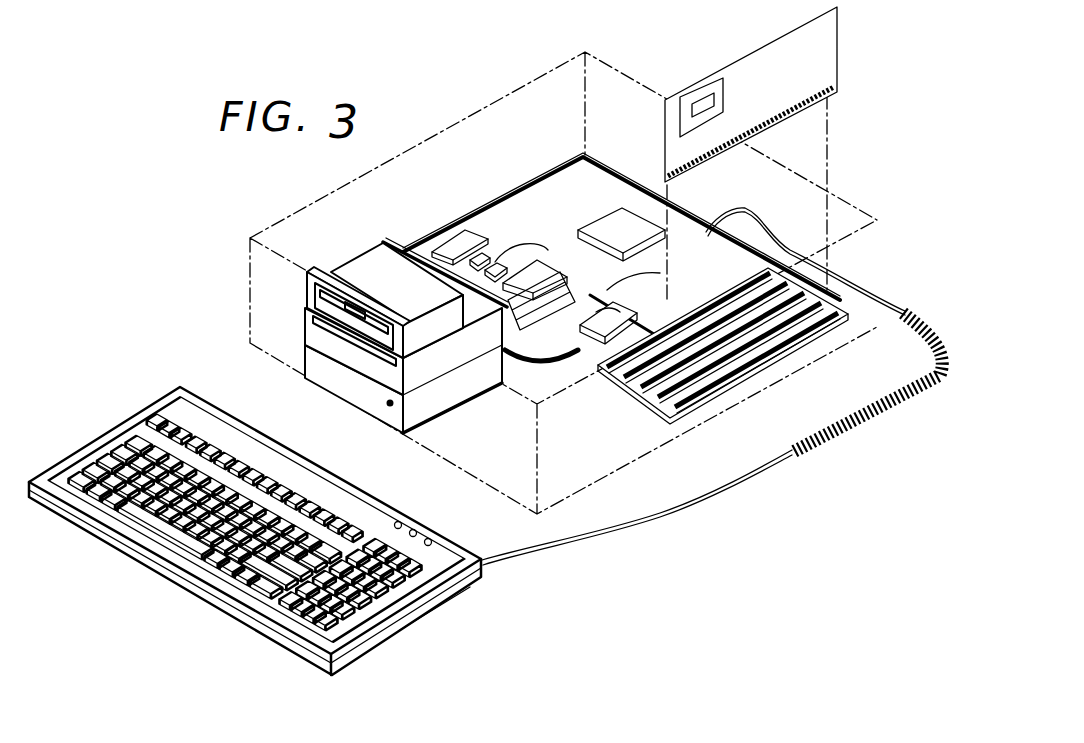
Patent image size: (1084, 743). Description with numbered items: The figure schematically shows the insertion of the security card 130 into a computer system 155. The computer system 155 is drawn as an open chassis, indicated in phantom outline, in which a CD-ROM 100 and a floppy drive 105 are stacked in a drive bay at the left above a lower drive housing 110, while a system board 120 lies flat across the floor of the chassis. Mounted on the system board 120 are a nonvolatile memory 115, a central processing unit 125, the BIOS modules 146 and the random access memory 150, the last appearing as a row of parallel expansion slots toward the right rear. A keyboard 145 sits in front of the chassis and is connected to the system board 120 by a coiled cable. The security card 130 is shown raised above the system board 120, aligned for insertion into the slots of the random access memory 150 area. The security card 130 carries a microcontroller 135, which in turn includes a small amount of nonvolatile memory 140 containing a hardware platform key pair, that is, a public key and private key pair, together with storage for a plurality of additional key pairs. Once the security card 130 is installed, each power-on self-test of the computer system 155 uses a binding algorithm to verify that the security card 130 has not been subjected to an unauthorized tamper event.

The CD-ROM 100 is at (293, 287).
The floppy drive 105 is at (340, 348).
The drive chassis / hard disk drive 110 is at (385, 405).
The nonvolatile memory 115 is at (455, 247).
The system board 120 is at (491, 205).
The central processing unit (CPU) 125 is at (633, 222).
The security card 130 is at (750, 58).
The microcontroller 135 is at (680, 97).
The nonvolatile memory 140 is at (727, 93).
The keyboard 145 is at (88, 452).
The BIOS modules 146 is at (535, 252).
The random access memory (RAM) 150 is at (628, 290).
The computer system 155 is at (193, 254).